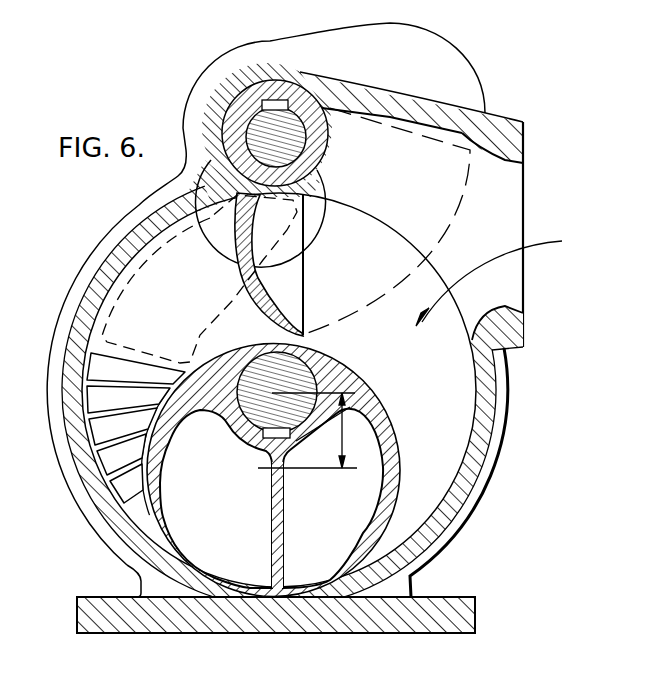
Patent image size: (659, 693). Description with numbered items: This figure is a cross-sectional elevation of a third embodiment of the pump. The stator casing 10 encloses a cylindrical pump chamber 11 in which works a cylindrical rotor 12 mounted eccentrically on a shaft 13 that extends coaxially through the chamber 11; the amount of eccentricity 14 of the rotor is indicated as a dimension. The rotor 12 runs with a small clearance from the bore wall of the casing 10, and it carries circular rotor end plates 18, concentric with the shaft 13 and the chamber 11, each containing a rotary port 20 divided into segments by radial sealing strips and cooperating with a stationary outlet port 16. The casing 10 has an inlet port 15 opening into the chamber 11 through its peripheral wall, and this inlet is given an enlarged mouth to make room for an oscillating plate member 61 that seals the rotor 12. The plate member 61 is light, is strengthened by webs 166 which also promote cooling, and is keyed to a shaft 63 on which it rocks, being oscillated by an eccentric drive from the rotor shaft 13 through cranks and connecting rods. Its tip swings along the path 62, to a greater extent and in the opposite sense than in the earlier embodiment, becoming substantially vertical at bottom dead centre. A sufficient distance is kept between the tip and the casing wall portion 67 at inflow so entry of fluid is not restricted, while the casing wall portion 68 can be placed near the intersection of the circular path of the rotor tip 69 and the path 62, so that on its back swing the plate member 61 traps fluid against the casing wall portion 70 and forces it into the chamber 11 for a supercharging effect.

The stator casing 10 is at (469, 470).
The pump chamber 11 is at (437, 432).
The rotor 12 is at (338, 374).
The shaft 13 is at (242, 427).
The eccentricity 14 is at (309, 430).
The inlet port 15 is at (492, 250).
The outlet ports 16 is at (50, 356).
The rotor end plates 18 is at (420, 503).
The rotary port 20 is at (110, 400).
The plate member 61 is at (249, 280).
The path of the tip of the plate member 62 is at (452, 216).
The shaft 63 is at (293, 128).
The portion of the casing wall at inflow 67 is at (481, 314).
The portion of the casing wall 68 is at (491, 152).
The rotor tip 69 is at (270, 582).
The portion of the casing wall 70 is at (457, 132).
The webs 166 is at (294, 231).